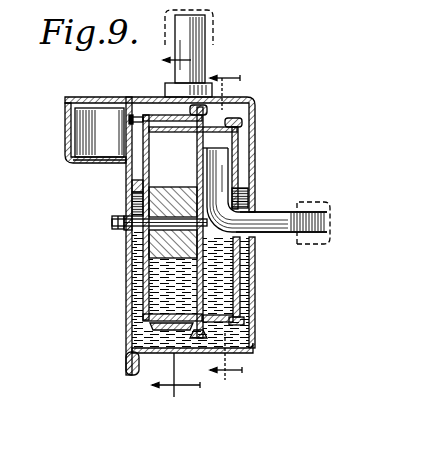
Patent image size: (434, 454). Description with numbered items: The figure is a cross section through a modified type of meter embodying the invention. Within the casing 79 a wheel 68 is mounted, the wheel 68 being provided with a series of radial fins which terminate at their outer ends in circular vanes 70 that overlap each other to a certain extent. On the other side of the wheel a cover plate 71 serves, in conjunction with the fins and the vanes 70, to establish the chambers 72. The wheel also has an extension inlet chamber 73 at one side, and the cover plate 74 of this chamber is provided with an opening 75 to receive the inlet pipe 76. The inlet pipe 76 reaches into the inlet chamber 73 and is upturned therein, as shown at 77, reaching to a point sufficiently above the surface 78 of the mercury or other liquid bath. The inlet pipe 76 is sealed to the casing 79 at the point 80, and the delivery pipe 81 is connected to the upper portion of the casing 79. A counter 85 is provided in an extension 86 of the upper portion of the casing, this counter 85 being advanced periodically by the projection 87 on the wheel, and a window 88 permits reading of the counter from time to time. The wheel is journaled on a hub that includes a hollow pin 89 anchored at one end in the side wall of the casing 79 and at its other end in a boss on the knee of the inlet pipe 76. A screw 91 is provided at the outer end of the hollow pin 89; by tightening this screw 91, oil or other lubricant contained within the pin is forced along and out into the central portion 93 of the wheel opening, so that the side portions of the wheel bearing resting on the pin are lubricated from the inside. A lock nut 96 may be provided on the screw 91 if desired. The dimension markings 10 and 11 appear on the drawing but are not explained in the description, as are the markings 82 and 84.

The axis dimension 10 is at (170, 232).
The offset dimension 11 is at (231, 227).
The wheel 68 is at (136, 283).
The circular vanes 70 is at (153, 193).
The cover plate 71 is at (205, 272).
The chambers 72 is at (143, 191).
The inlet chamber 73 is at (221, 143).
The cover plate 74 is at (242, 311).
The opening 75 is at (256, 203).
The inlet pipe 76 is at (262, 233).
The upturned portion 77 is at (241, 177).
The surface of the liquid bath 78 is at (132, 184).
The casing 79 is at (127, 313).
The sealing point 80 is at (264, 211).
The delivery pipe 81 is at (205, 58).
The chamber plate 82 is at (165, 147).
The inner frame 84 is at (206, 113).
The counter 85 is at (92, 132).
The extension 86 is at (88, 161).
The projection 87 is at (135, 118).
The window 88 is at (97, 99).
The hollow pin 89 is at (256, 258).
The screw 91 is at (112, 226).
The central portion of the wheel opening 93 is at (137, 243).
The lock nut 96 is at (126, 231).